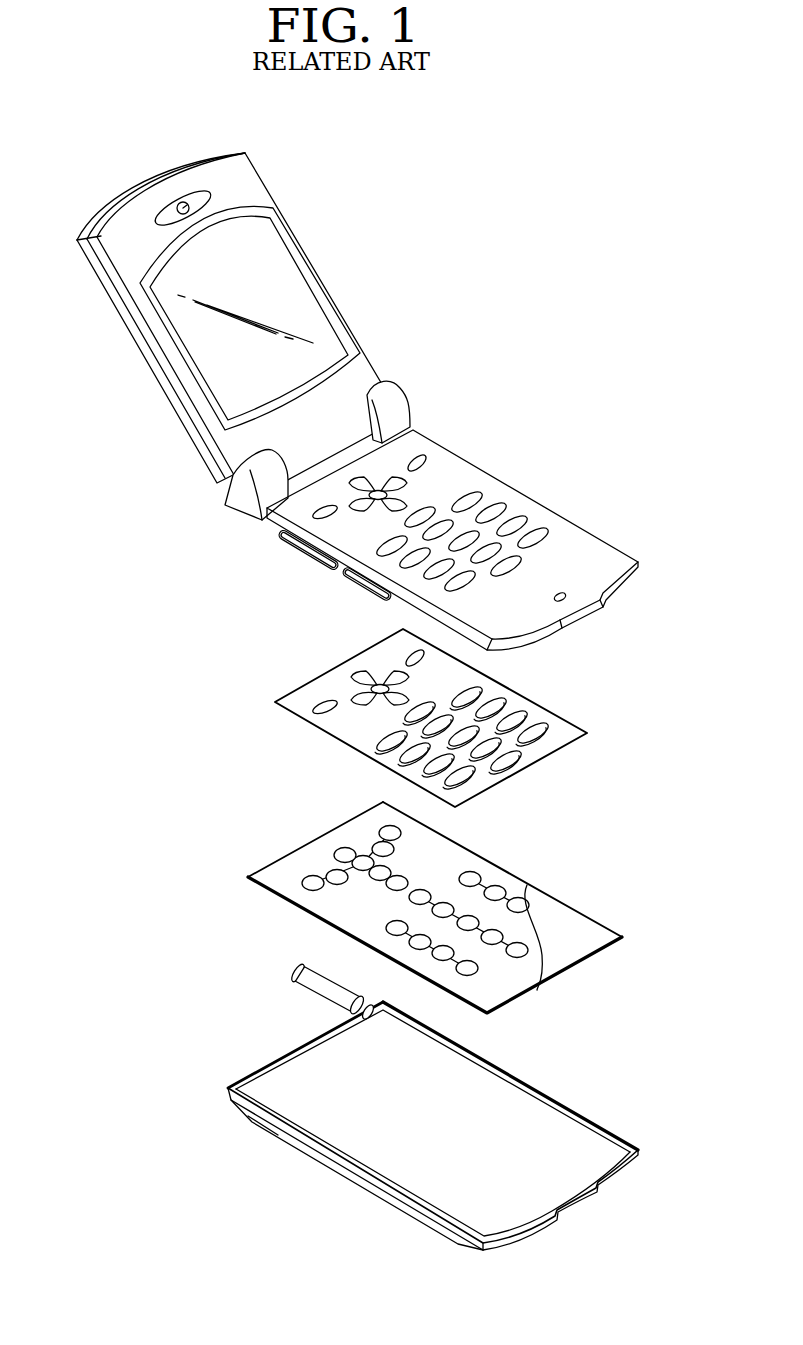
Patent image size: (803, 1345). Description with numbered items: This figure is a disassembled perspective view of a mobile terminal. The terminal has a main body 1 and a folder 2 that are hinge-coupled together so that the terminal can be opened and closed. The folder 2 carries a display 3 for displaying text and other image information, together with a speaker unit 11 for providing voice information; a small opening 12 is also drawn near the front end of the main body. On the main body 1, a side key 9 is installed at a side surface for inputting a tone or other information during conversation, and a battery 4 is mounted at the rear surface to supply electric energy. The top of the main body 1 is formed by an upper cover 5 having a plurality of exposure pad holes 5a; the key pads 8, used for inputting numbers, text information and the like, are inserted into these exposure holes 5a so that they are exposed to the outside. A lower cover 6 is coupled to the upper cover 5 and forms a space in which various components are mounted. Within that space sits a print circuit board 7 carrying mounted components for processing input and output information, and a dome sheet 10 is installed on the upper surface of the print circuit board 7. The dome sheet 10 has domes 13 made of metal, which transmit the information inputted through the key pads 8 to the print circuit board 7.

The main body 1 is at (454, 514).
The folder 2 is at (229, 327).
The display 3 is at (275, 268).
The battery 4 is at (433, 1110).
The upper cover 5 is at (452, 514).
The exposure pad holes 5a is at (422, 517).
The lower cover 6 is at (510, 1072).
The print circuit board 7 is at (451, 904).
The key pads 8 is at (518, 717).
The side key 9 is at (308, 557).
The dome sheet 10 is at (437, 886).
The speaker unit 11 is at (207, 193).
The microphone hole 12 is at (563, 590).
The domes 13 is at (473, 880).